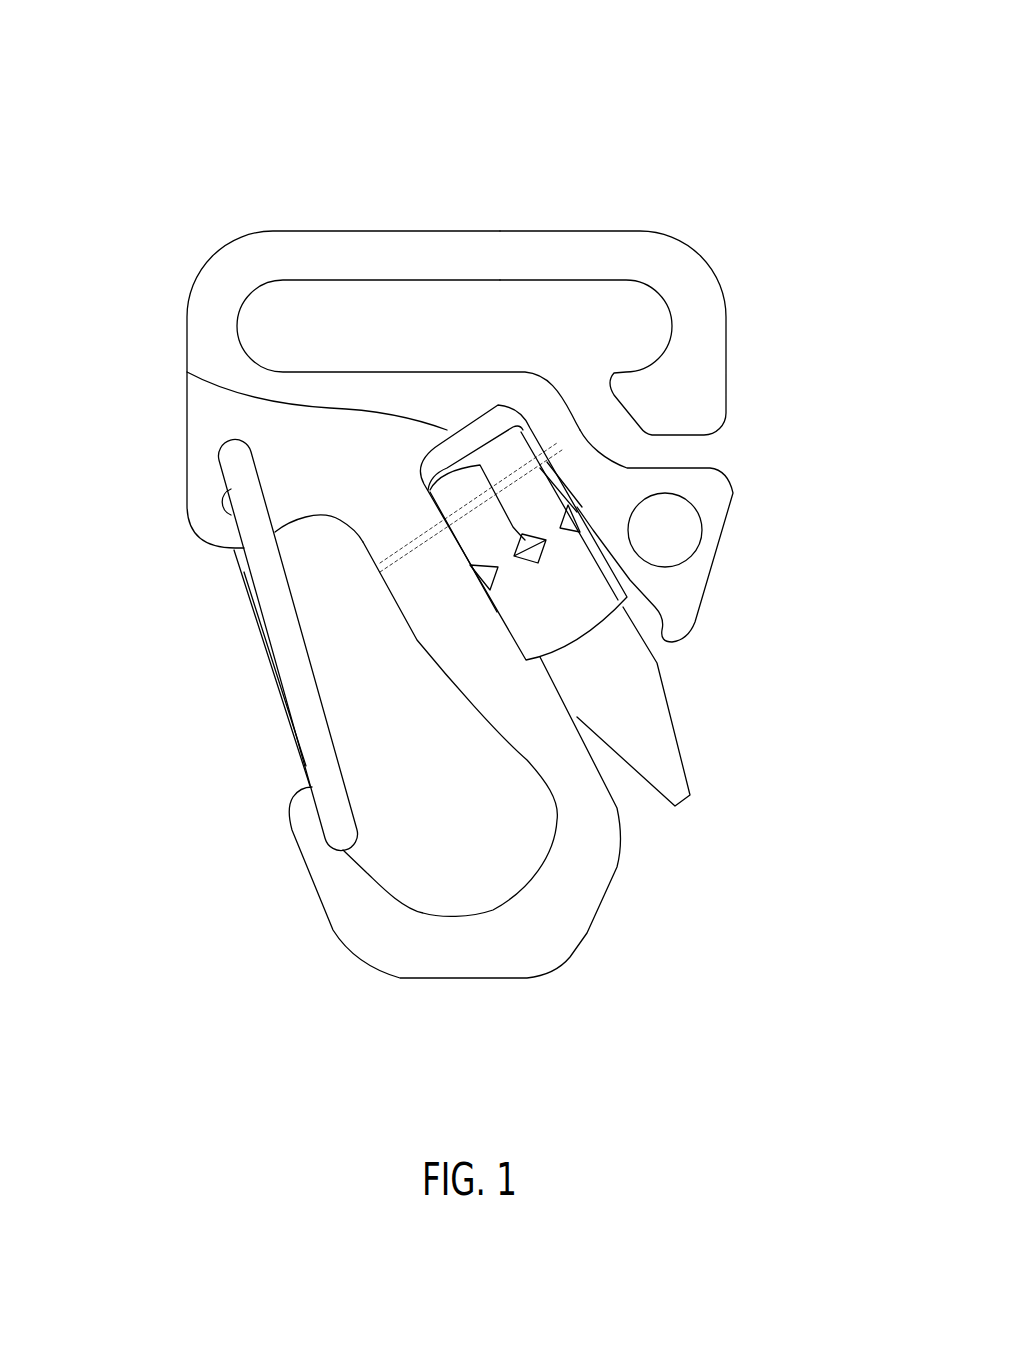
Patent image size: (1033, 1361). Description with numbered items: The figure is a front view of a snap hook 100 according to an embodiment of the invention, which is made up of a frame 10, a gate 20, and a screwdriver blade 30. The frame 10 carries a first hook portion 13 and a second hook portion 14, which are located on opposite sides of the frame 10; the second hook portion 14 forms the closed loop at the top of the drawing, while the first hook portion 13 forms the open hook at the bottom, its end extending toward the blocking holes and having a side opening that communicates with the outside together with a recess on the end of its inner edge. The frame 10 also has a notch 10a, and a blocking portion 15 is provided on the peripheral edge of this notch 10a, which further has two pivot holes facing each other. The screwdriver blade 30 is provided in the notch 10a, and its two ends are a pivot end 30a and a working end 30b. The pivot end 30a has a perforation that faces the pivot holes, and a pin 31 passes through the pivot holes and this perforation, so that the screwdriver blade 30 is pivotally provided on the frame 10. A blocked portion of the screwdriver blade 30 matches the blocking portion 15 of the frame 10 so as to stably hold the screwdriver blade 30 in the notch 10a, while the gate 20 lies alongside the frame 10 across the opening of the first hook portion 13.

The snap hook 100 is at (713, 150).
The frame 10 is at (570, 228).
The notch 10a is at (187, 372).
The first hook portion 13 is at (590, 933).
The second hook portion 14 is at (700, 255).
The blocking portion 15 is at (573, 523).
The gate 20 is at (263, 658).
The screwdriver blade 30 is at (665, 688).
The pivot end 30a is at (540, 446).
The working end 30b is at (680, 750).
The pin 31 is at (560, 480).